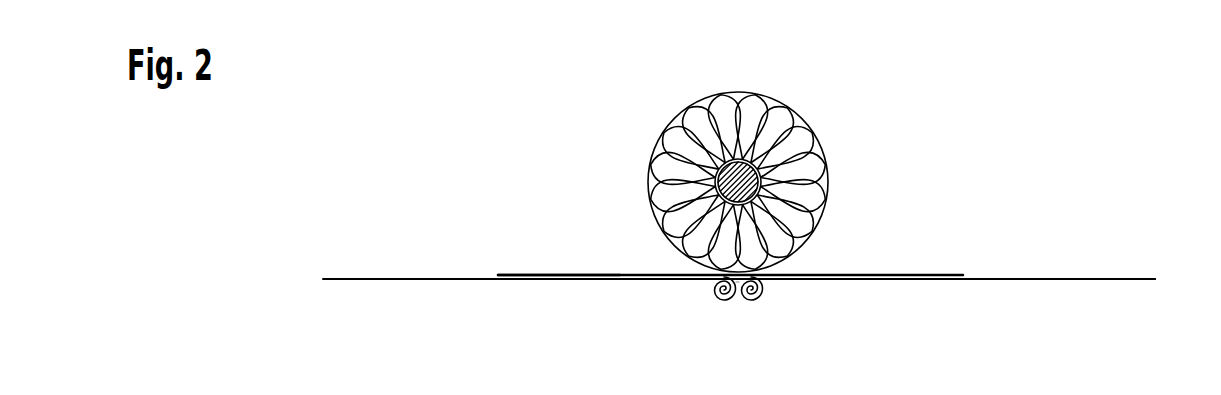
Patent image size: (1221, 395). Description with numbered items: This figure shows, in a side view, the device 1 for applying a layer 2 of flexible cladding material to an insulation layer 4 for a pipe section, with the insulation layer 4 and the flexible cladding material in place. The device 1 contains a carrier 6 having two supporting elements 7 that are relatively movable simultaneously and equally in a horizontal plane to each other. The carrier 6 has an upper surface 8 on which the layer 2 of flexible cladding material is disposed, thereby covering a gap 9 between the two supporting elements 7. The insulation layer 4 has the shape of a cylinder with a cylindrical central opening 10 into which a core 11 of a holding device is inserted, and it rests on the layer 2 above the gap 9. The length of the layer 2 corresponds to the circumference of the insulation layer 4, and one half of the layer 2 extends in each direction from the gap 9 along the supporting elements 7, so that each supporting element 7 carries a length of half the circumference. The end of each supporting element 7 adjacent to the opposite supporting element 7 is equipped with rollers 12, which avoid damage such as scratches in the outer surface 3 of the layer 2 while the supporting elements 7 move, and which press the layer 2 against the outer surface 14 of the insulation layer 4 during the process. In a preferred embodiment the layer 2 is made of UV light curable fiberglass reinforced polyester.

The device 1 is at (1067, 140).
The layer of flexible cladding material 2 is at (897, 277).
The outer surface 3 is at (557, 273).
The insulation layer 4 is at (805, 158).
The carrier 6 is at (1142, 268).
The supporting elements 7 is at (403, 281).
The upper surface 8 is at (433, 277).
The gap 9 is at (739, 302).
The cylindrical central opening 10 is at (745, 172).
The core 11 is at (735, 183).
The rollers 12 is at (718, 298).
The outer surface of the insulation layer 14 is at (753, 91).